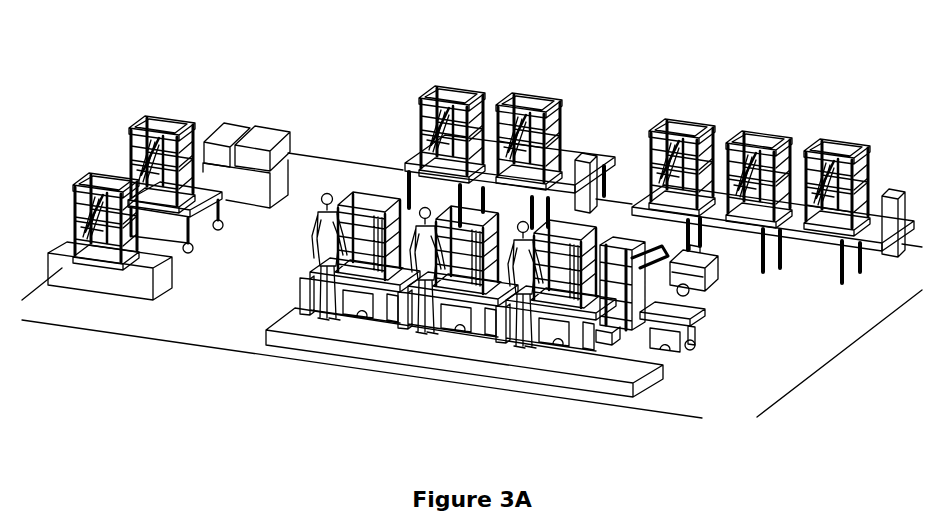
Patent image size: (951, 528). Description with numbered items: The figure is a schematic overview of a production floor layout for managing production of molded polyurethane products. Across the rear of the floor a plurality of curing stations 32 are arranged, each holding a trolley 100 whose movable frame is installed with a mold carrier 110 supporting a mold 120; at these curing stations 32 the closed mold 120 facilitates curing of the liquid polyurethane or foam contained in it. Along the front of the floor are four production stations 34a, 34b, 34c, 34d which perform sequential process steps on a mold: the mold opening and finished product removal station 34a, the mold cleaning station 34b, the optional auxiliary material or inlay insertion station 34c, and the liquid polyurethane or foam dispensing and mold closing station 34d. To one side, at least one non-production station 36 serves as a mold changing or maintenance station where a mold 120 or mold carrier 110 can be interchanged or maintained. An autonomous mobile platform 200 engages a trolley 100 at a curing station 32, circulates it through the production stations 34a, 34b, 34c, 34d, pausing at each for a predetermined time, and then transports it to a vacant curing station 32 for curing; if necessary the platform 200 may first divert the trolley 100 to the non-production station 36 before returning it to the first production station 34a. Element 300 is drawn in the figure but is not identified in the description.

The curing stations 32 is at (440, 62).
The mold opening and finished product removal station 34a is at (267, 363).
The mold cleaning station 34b is at (368, 380).
The auxiliary material insertion and/or inlay insertion station 34c is at (473, 397).
The liquid polyurethane or foam material dispensing and mold closing station 34d is at (573, 410).
The non-production station 36 is at (37, 332).
The trolley 100 is at (128, 120).
The mold carrier 110 is at (72, 182).
The mold 120 is at (231, 111).
The autonomous mobile platform 200 is at (712, 290).
The robot workstation 300 is at (298, 263).